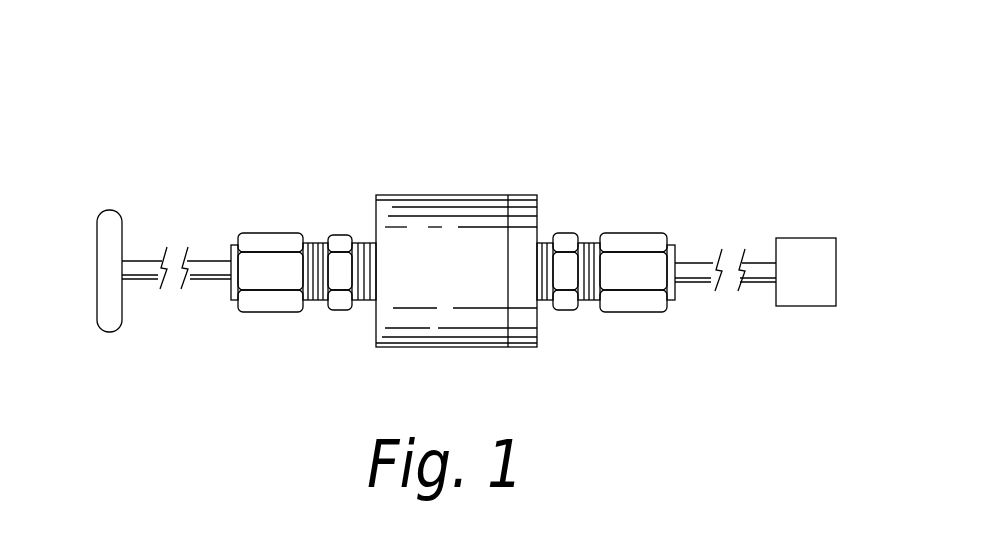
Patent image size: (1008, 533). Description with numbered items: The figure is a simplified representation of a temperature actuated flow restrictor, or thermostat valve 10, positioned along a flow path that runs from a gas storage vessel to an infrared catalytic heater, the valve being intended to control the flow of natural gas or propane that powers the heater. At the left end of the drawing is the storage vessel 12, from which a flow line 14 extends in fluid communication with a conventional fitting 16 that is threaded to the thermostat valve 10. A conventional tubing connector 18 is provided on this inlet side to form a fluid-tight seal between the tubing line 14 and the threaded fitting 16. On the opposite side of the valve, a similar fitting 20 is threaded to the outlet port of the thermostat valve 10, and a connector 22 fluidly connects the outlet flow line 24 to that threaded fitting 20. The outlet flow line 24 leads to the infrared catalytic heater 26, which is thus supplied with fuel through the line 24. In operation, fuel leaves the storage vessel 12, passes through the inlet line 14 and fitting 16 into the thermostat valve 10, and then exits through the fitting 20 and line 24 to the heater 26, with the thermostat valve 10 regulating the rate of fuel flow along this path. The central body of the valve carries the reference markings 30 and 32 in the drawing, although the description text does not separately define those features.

The thermostat valve 10 is at (468, 153).
The storage vessel 12 is at (118, 232).
The flow line 14 is at (140, 276).
The fitting 16 is at (338, 245).
The tubing connector 18 is at (275, 262).
The fitting 20 is at (570, 238).
The connector 22 is at (644, 270).
The outlet flow line 24 is at (760, 279).
The infrared catalytic heater 26 is at (817, 250).
The housing body 30 is at (415, 217).
The end cap line 32 is at (519, 197).